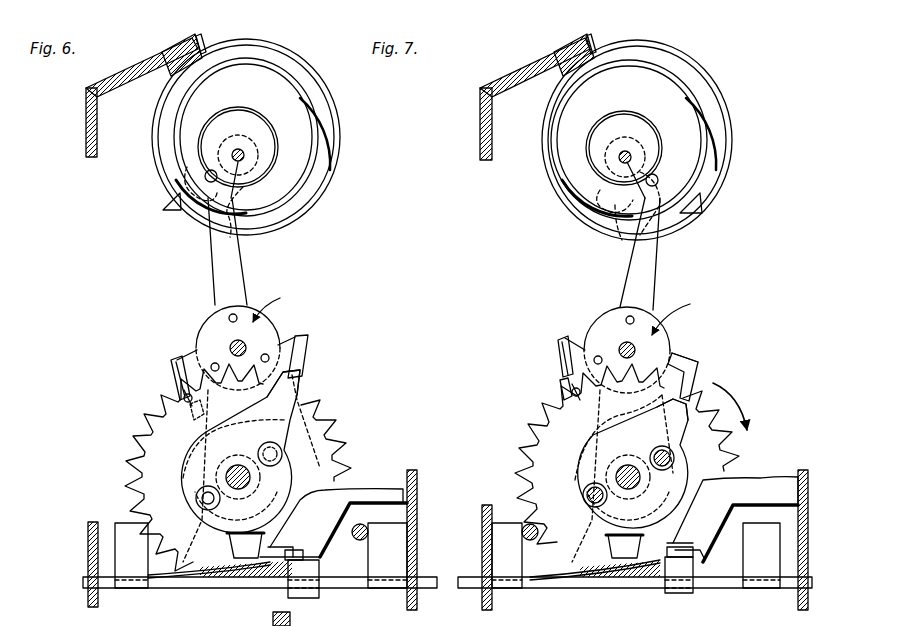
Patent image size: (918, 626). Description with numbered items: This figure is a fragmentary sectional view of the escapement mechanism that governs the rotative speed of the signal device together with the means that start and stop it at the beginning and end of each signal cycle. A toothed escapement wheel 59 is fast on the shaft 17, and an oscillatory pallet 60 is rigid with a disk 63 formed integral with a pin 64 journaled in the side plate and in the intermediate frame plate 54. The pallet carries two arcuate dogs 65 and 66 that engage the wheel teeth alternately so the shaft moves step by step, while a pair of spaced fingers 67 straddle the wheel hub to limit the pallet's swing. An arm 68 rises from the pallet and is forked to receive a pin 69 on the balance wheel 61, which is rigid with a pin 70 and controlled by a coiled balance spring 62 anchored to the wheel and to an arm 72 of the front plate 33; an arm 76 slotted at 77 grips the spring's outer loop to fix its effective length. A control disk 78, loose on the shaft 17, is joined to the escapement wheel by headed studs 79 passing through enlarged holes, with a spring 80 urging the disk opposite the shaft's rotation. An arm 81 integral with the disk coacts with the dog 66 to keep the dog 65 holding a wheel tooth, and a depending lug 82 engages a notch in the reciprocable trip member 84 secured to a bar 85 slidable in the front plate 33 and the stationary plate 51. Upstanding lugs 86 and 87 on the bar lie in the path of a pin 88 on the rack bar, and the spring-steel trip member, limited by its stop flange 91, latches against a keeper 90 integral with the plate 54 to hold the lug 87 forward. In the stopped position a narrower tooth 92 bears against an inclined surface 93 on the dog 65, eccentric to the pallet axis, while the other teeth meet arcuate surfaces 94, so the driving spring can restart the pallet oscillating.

In FIG. 6, the shaft 17 is at (250, 480).
In FIG. 7, the shaft 17 is at (620, 473).
In FIG. 6, the front plate 33 is at (417, 508).
In FIG. 7, the front plate 33 is at (800, 473).
In FIG. 6, the stationary plate 51 is at (88, 545).
In FIG. 6, the intermediate frame plate 54 is at (375, 492).
In FIG. 7, the intermediate frame plate 54 is at (772, 482).
In FIG. 6, the escapement wheel 59 is at (310, 398).
In FIG. 7, the escapement wheel 59 is at (707, 460).
In FIG. 6, the pallet 60 is at (277, 306).
In FIG. 7, the pallet 60 is at (676, 313).
In FIG. 7, the balance wheel 61 is at (567, 187).
In FIG. 6, the balance spring 62 is at (330, 90).
In FIG. 7, the balance spring 62 is at (724, 100).
In FIG. 7, the disk 63 is at (693, 352).
In FIG. 6, the pin 64 is at (246, 342).
In FIG. 7, the pin 64 is at (637, 347).
In FIG. 6, the pallet dog 65 is at (170, 362).
In FIG. 7, the pallet dog 65 is at (560, 340).
In FIG. 6, the pallet dog 66 is at (312, 345).
In FIG. 7, the pallet dog 66 is at (697, 365).
In FIG. 6, the fingers 67 is at (345, 441).
In FIG. 7, the fingers 67 is at (517, 477).
In FIG. 6, the arm 68 is at (226, 252).
In FIG. 7, the arm 68 is at (647, 277).
In FIG. 6, the pin 69 is at (207, 172).
In FIG. 7, the pin 69 is at (657, 175).
In FIG. 6, the pin 70 is at (240, 150).
In FIG. 7, the pin 70 is at (628, 152).
In FIG. 6, the arm 72 is at (143, 80).
In FIG. 7, the arm 72 is at (537, 63).
In FIG. 6, the arm 76 is at (199, 38).
In FIG. 7, the arm 76 is at (587, 40).
In FIG. 6, the slot 77 is at (202, 45).
In FIG. 7, the slot 77 is at (574, 55).
In FIG. 6, the control disk 78 is at (257, 440).
In FIG. 7, the control disk 78 is at (660, 510).
In FIG. 6, the headed studs 79 is at (279, 463).
In FIG. 7, the headed studs 79 is at (674, 455).
In FIG. 6, the spring 80 is at (195, 505).
In FIG. 7, the spring 80 is at (572, 505).
In FIG. 6, the arm 81 is at (302, 380).
In FIG. 7, the arm 81 is at (697, 397).
In FIG. 6, the depending lug 82 is at (248, 560).
In FIG. 7, the depending lug 82 is at (622, 552).
In FIG. 6, the trip member 84 is at (300, 556).
In FIG. 7, the trip member 84 is at (668, 575).
In FIG. 6, the bar 85 is at (430, 588).
In FIG. 7, the bar 85 is at (466, 585).
In FIG. 6, the lug 86 is at (133, 565).
In FIG. 7, the lug 86 is at (506, 568).
In FIG. 6, the lug 87 is at (388, 568).
In FIG. 7, the lug 87 is at (763, 567).
In FIG. 6, the pin 88 is at (368, 534).
In FIG. 7, the pin 88 is at (522, 535).
In FIG. 6, the latch keeper 90 is at (318, 556).
In FIG. 7, the latch keeper 90 is at (703, 558).
In FIG. 6, the stop flange 91 is at (320, 593).
In FIG. 7, the stop flange 91 is at (690, 593).
In FIG. 6, the tooth 92 is at (182, 394).
In FIG. 7, the tooth 92 is at (573, 383).
In FIG. 6, the inclined surface 93 is at (187, 418).
In FIG. 7, the inclined surface 93 is at (560, 372).
In FIG. 6, the arcuate surfaces 94 is at (175, 378).
In FIG. 7, the arcuate surfaces 94 is at (560, 353).